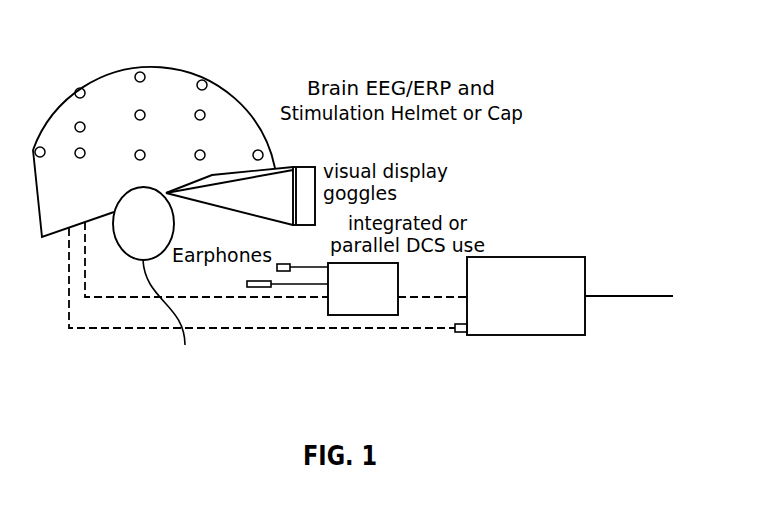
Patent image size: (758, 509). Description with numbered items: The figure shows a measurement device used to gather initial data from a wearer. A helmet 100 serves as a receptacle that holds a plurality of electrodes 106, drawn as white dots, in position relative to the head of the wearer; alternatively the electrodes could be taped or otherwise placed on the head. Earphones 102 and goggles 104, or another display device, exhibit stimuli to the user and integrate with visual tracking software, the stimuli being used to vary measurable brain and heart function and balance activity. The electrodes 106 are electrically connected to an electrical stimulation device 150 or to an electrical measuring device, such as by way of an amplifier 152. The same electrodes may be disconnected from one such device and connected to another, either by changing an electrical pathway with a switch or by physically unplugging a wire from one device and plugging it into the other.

The helmet 100 is at (183, 68).
The electrodes 106 is at (80, 88).
The goggles 104 is at (303, 167).
The earphones 102 is at (220, 282).
The electrical stimulation device 150 is at (363, 315).
The amplifier 152 is at (527, 335).